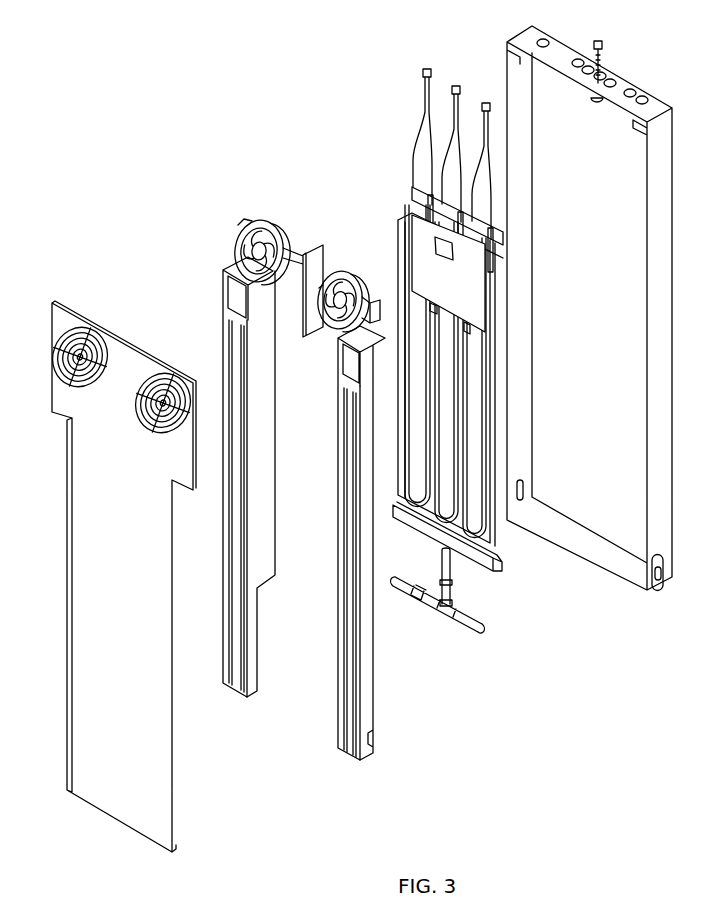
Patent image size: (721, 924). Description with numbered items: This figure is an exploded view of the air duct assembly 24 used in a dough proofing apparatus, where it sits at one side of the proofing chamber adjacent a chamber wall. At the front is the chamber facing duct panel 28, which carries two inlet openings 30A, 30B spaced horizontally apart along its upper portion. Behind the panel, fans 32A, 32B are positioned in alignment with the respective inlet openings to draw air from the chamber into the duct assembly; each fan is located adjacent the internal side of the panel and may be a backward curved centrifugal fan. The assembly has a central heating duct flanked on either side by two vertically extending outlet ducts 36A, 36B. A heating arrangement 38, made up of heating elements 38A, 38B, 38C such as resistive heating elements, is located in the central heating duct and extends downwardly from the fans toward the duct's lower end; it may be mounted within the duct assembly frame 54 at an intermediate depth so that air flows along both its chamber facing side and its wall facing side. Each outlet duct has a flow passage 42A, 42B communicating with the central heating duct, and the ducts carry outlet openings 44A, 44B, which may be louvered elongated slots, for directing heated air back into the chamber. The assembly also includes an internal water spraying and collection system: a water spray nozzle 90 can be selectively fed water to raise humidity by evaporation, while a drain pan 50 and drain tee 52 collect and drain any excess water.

The air duct assembly 24 is at (318, 123).
The chamber facing duct panel 28 is at (65, 414).
The inlet opening 30A is at (78, 324).
The inlet opening 30B is at (161, 370).
The fan 32A is at (258, 222).
The fan 32B is at (337, 268).
The outlet duct 36A is at (239, 477).
The outlet duct 36B is at (353, 579).
The heating arrangement 38 is at (393, 147).
The heating element 38A is at (418, 318).
The heating element 38B is at (452, 423).
The heating element 38C is at (480, 357).
The flow passage 42A is at (257, 597).
The flow passage 42B is at (337, 658).
The outlet openings 44A is at (233, 538).
The outlet openings 44B is at (352, 757).
The drain pan 50 is at (500, 572).
The drain tee 52 is at (418, 597).
The duct assembly frame 54 is at (672, 283).
The water spray nozzle 90 is at (440, 215).